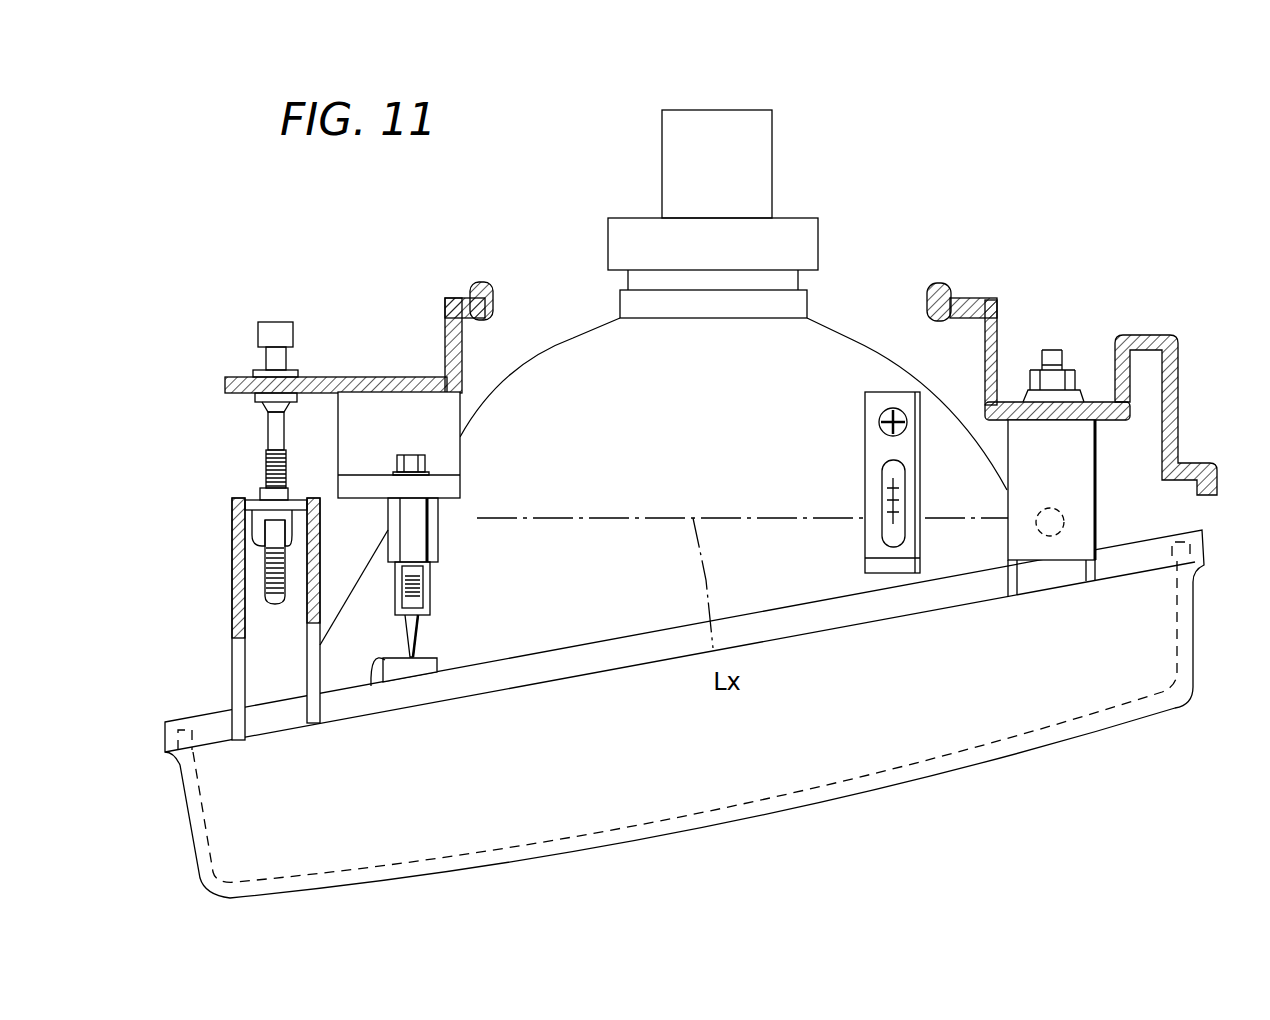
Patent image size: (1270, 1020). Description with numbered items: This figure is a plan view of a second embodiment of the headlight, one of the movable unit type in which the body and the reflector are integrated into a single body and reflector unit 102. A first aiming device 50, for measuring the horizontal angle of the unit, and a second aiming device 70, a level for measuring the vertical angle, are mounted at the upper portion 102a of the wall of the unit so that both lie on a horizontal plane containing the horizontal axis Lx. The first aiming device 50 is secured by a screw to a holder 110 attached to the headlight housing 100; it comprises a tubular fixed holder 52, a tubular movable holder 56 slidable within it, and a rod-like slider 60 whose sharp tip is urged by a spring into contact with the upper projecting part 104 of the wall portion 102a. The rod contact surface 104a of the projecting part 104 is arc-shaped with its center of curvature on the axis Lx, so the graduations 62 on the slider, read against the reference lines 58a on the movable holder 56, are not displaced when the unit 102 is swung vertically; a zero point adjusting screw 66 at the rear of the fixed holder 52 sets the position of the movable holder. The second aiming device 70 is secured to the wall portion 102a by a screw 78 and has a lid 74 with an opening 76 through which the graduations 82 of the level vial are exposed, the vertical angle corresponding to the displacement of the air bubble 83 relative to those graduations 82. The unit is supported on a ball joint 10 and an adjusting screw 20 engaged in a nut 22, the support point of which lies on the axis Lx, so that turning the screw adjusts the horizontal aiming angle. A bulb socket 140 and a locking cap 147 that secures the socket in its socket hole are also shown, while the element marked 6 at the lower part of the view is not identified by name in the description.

The lamp housing 6 is at (662, 835).
The ball joint 10 is at (1066, 518).
The adjusting screw 20 is at (210, 522).
The nut 22 is at (232, 553).
The first aiming device 50 is at (368, 591).
The tubular fixed holder 52 is at (445, 530).
The tubular movable holder 56 is at (432, 583).
The reference lines 58a is at (395, 596).
The slider 60 is at (442, 638).
The graduations 62 is at (430, 605).
The zero point adjusting screw 66 is at (412, 455).
The second aiming device 70 is at (936, 424).
The lid 74 is at (913, 480).
The opening 76 is at (881, 470).
The fastening screw 78 is at (880, 422).
The graduations 82 is at (888, 500).
The air bubble 83 is at (868, 535).
The headlight housing 100 is at (458, 290).
The body and reflector unit 102 is at (575, 340).
The upper portion of the wall 102a is at (808, 368).
The upper projecting part 104 is at (420, 668).
The rod contact surface 104a is at (372, 665).
The holder 110 is at (372, 410).
The bulb socket 140 is at (782, 153).
The locking cap 147 is at (808, 226).